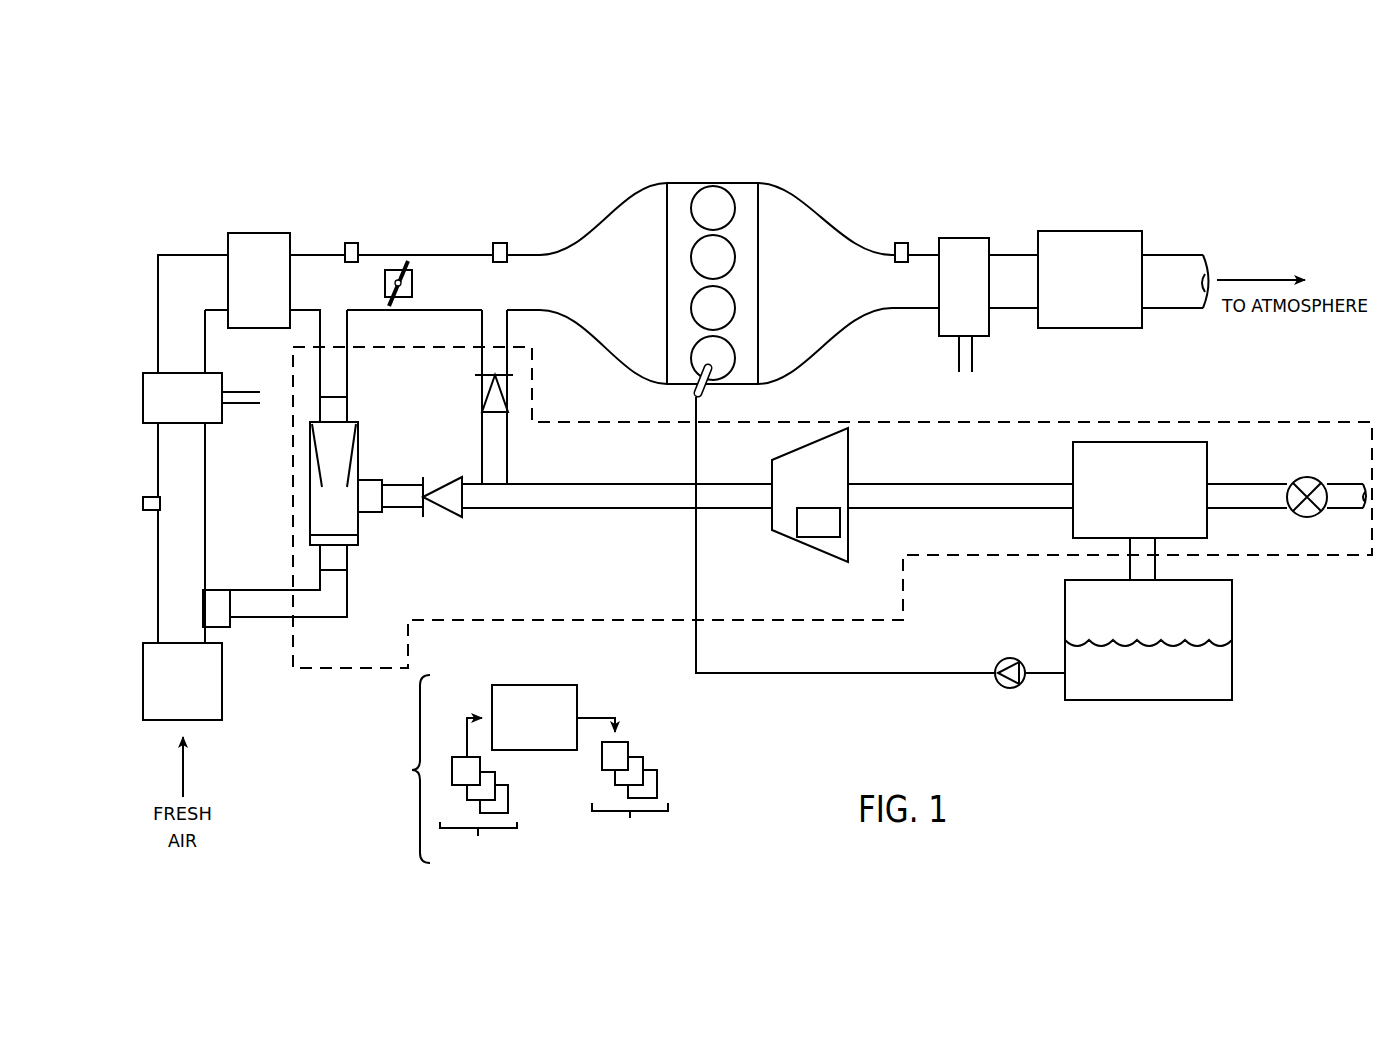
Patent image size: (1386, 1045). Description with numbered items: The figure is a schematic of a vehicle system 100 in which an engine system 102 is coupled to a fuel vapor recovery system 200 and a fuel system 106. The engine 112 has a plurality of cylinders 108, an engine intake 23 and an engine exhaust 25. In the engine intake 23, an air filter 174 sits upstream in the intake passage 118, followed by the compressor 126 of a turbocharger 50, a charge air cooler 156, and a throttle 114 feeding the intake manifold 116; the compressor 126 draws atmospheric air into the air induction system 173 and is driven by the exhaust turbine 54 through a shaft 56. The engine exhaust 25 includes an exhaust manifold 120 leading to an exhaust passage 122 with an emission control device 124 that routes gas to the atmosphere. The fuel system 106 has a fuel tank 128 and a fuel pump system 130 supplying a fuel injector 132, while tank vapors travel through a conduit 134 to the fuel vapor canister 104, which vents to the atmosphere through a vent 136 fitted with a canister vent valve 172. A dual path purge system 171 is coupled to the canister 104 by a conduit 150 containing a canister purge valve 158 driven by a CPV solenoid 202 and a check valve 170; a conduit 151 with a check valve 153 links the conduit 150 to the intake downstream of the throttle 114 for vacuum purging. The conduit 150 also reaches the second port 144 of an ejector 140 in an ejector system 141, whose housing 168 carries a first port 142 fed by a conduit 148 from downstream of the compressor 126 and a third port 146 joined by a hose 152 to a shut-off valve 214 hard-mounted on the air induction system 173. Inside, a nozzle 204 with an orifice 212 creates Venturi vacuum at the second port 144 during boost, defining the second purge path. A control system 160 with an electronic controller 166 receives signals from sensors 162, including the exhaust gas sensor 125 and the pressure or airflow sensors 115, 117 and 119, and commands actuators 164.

The vehicle system 100 is at (257, 163).
The engine system 102 is at (928, 160).
The fuel vapor canister 104 is at (1207, 465).
The fuel system 106 is at (1155, 738).
The cylinders 108 is at (760, 265).
The engine 112 is at (828, 218).
The throttle 114 is at (412, 289).
The pressure or airflow sensor 115 is at (502, 243).
The intake manifold 116 is at (613, 292).
The pressure or air flow sensor 117 is at (353, 243).
The intake passage 118 is at (205, 292).
The pressure or air flow sensor 119 is at (140, 503).
The exhaust manifold 120 is at (842, 292).
The exhaust passage 122 is at (1160, 255).
The emission control device 124 is at (1082, 231).
The exhaust gas sensor 125 is at (902, 243).
The compressor 126 is at (182, 398).
The fuel tank 128 is at (1233, 678).
The fuel pump system 130 is at (1010, 658).
The fuel injector 132 is at (703, 388).
The conduit 134 is at (1157, 565).
The vent 136 is at (1258, 507).
The ejector 140 is at (313, 505).
The ejector system 141 is at (325, 647).
The first port 142 is at (349, 401).
The second port 144 is at (377, 513).
The third port 146 is at (350, 558).
The conduit 148 is at (347, 323).
The conduit 150 is at (635, 507).
The conduit 151 is at (482, 323).
The conduit or hose 152 is at (327, 619).
The check valve 153 is at (486, 395).
The charge air cooler 156 is at (273, 292).
The canister purge valve 158 is at (850, 470).
The control system 160 is at (404, 769).
The sensors 162 is at (478, 808).
The actuators 164 is at (630, 792).
The controller 166 is at (541, 721).
The housing 168 is at (310, 488).
The check valve 170 is at (448, 517).
The dual path purge system 171 is at (598, 533).
The canister vent valve 172 is at (1305, 477).
The air induction system 173 is at (145, 617).
The air filter 174 is at (197, 692).
The fuel vapor recovery system 200 is at (580, 620).
The CPV solenoid 202 is at (818, 522).
The nozzle 204 is at (318, 458).
The orifice 212 is at (333, 488).
The shut-off valve 214 is at (360, 540).
The engine intake 23 is at (587, 337).
The engine exhaust 25 is at (822, 348).
The turbocharger 50 is at (995, 343).
The exhaust turbine 54 is at (964, 287).
The shaft 56 is at (972, 352).